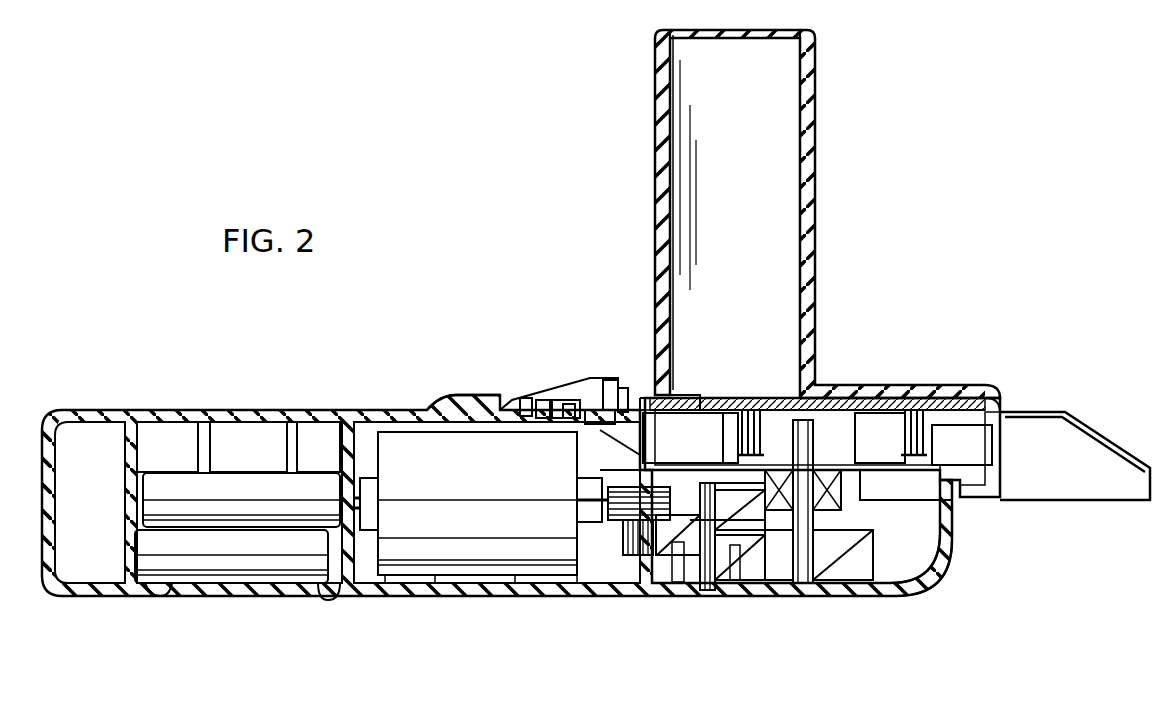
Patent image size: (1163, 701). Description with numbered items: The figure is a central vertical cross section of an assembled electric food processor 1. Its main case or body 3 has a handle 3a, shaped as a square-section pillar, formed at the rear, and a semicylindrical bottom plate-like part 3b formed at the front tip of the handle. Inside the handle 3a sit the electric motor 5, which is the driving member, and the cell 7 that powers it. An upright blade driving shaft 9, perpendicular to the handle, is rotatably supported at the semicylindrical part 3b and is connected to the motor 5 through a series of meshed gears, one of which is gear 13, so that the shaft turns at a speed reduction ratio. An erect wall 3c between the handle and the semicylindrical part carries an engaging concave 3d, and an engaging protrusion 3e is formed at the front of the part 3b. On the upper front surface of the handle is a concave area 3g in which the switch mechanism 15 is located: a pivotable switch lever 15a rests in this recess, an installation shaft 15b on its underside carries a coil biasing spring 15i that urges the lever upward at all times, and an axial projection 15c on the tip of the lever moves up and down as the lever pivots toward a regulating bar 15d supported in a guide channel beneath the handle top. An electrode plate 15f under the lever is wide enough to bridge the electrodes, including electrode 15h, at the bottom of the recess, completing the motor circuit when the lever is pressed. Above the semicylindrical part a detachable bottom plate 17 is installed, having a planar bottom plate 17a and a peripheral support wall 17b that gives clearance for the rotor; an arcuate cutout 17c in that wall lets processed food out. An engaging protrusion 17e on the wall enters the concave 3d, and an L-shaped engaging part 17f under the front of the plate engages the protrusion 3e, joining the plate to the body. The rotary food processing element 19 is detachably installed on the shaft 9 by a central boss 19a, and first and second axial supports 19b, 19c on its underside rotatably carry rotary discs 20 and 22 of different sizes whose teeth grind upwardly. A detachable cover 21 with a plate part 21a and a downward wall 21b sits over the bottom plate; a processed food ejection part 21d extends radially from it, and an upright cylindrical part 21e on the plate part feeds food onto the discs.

The electric food processor 1 is at (493, 200).
The main case or body 3 is at (532, 583).
The handle 3a is at (338, 598).
The semicylindrical bottom plate like part 3b is at (905, 588).
The erect wall 3c is at (650, 450).
The engaging concave or lip 3d is at (620, 440).
The engaging protrusion 3e is at (944, 500).
The concave area 3g is at (510, 404).
The electric motor 5 is at (472, 575).
The cell 7 is at (226, 515).
The blade driving shaft 9 is at (800, 585).
The gear 13 is at (750, 560).
The switch mechanism 15 is at (540, 308).
The switch lever 15a is at (610, 378).
The installation shaft 15b is at (526, 398).
The regulating shaft or axial projection 15c is at (623, 388).
The regulating member or bar 15d is at (600, 424).
The electrode plate 15f is at (565, 400).
The electrode 15h is at (580, 404).
The coil biasing spring 15i is at (543, 418).
The bottom plate 17 is at (983, 483).
The planar bottom plate 17a is at (882, 483).
The peripheral support wall 17b is at (640, 465).
The arcuate cutout 17c is at (990, 445).
The engaging protrusion 17e is at (683, 438).
The engaging part 17f is at (950, 497).
The rotary food processing element 19 is at (1000, 405).
The boss 19a is at (877, 438).
The first axial support 19b is at (707, 438).
The second axial support 19c is at (962, 445).
The rotary disc 20 is at (694, 398).
The cover 21 is at (856, 203).
The plate part 21a is at (878, 386).
The downward wall 21b is at (648, 395).
The processed food ejection part 21d is at (1108, 440).
The cylindrical part 21e is at (812, 120).
The rotary disc 22 is at (916, 405).